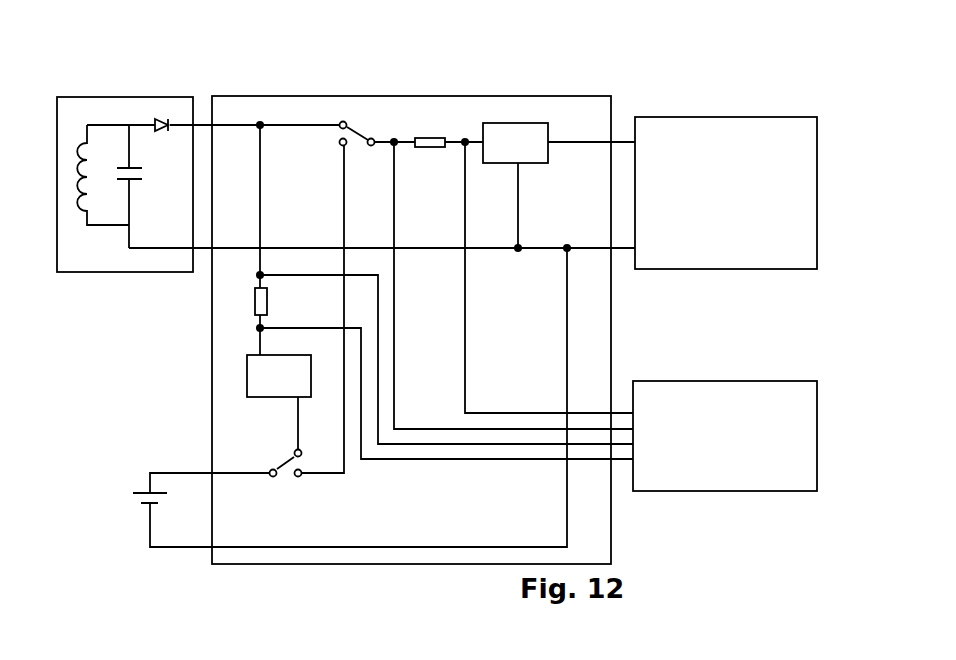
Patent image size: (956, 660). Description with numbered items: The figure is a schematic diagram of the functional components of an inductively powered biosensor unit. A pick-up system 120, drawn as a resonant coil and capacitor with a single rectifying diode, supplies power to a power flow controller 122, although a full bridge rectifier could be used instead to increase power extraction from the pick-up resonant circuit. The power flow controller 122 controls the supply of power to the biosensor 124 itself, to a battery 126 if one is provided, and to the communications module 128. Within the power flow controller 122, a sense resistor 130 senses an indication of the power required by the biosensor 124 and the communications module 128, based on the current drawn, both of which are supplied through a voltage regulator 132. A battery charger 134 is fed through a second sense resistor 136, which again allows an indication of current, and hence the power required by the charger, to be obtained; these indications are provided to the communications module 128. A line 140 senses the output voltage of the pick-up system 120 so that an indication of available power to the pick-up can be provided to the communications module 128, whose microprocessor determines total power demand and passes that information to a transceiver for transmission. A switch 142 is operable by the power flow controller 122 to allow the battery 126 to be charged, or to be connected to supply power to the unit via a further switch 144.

The pick-up system 120 is at (138, 97).
The power flow controller 122 is at (302, 95).
The biosensor 124 is at (733, 117).
The battery 126 is at (148, 510).
The communications module 128 is at (740, 381).
The sense resistor 130 is at (440, 133).
The voltage regulator 132 is at (538, 123).
The battery charger 134 is at (247, 375).
The sense resistor 136 is at (255, 299).
The line 140 is at (280, 274).
The switch 142 is at (284, 463).
The switch 144 is at (360, 133).